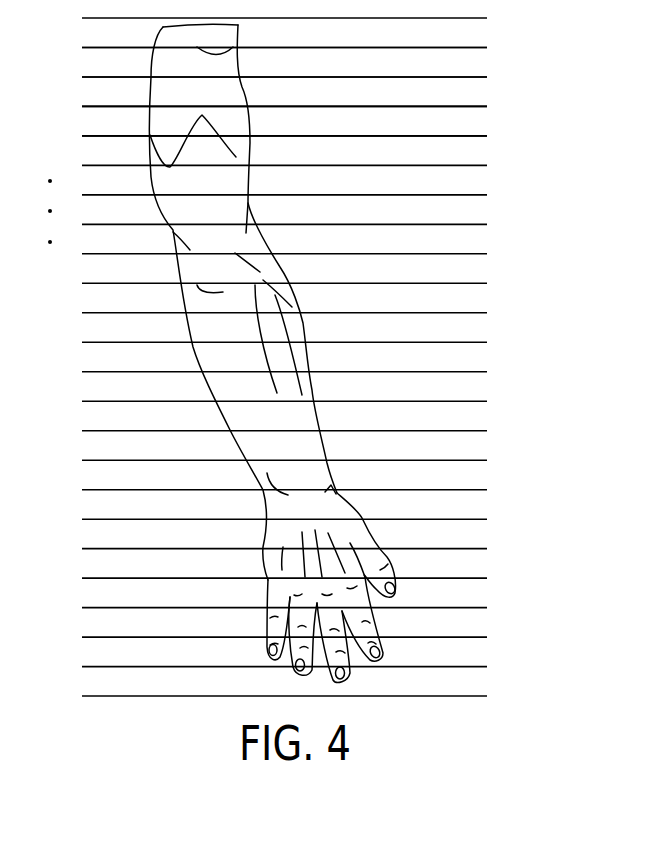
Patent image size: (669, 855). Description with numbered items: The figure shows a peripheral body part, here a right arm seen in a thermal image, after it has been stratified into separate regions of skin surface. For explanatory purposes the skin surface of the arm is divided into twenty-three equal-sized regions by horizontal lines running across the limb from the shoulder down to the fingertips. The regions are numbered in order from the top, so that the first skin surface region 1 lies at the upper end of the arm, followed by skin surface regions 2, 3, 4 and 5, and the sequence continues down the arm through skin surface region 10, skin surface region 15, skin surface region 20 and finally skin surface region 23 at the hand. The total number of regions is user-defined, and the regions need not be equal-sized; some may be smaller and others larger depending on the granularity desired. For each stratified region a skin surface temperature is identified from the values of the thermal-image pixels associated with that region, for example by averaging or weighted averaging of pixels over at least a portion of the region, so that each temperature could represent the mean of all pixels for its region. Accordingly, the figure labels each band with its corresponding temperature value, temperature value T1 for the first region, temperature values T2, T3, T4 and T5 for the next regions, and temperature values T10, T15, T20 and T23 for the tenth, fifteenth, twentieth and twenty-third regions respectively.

The skin surface region 1 is at (77, 33).
The skin surface region 2 is at (77, 62).
The skin surface region 3 is at (77, 92).
The skin surface region 4 is at (77, 121).
The skin surface region 5 is at (77, 151).
The skin surface region 10 is at (77, 296).
The skin surface region 15 is at (77, 446).
The skin surface region 20 is at (77, 593).
The skin surface region 23 is at (77, 682).
The temperature value T1 is at (492, 33).
The temperature value T2 is at (492, 62).
The temperature value T3 is at (492, 92).
The temperature value T4 is at (492, 121).
The temperature value T5 is at (492, 151).
The temperature value T10 is at (492, 296).
The temperature value T15 is at (492, 446).
The temperature value T20 is at (492, 593).
The temperature value T23 is at (492, 682).